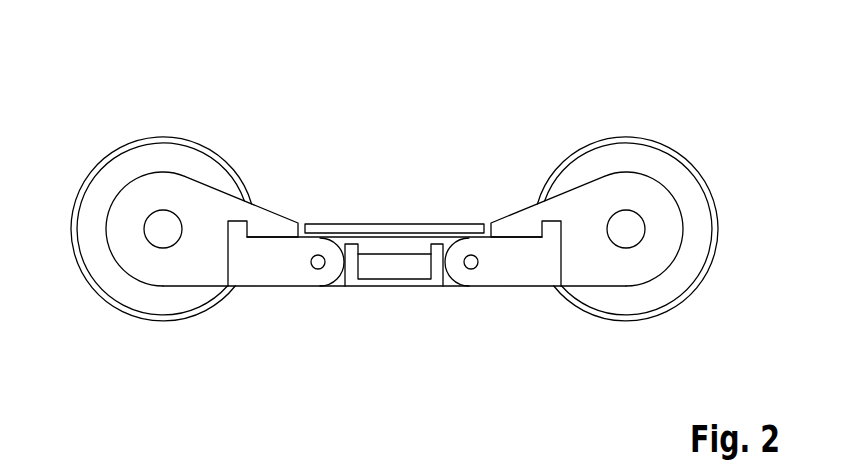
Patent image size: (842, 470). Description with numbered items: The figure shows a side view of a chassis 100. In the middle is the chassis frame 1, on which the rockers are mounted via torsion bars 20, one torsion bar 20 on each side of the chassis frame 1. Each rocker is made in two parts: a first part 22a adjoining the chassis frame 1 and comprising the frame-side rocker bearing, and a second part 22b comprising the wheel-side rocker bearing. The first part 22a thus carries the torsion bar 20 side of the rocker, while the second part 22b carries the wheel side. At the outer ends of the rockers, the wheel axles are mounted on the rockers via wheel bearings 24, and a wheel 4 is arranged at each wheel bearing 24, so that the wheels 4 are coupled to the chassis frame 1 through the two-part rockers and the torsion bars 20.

The chassis 100 is at (185, 90).
The chassis frame 1 is at (387, 286).
The wheel 4 is at (138, 320).
The torsion bar 20 is at (317, 269).
The first part 22a is at (263, 255).
The second part 22b is at (167, 267).
The wheel bearing 24 is at (157, 233).